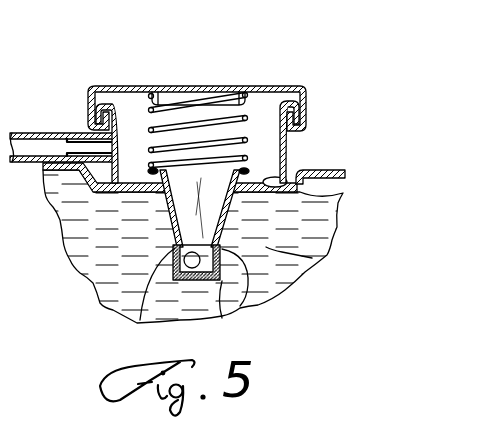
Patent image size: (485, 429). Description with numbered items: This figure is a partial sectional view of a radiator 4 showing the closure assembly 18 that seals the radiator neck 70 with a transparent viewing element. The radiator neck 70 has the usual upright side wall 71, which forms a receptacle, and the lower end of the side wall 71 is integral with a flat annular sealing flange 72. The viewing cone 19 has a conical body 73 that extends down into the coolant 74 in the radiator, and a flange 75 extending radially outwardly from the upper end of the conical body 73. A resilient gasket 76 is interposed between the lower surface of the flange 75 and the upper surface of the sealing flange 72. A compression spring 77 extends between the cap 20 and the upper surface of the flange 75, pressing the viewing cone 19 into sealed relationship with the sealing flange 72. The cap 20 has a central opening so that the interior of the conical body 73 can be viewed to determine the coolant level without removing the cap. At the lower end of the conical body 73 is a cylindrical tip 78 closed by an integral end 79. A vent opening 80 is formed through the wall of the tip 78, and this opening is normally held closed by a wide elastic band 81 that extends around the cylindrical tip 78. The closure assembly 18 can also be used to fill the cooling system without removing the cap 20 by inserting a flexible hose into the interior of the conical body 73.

The radiator 4 is at (337, 237).
The closure assembly 18 is at (225, 105).
The viewing cone 19 is at (168, 230).
The cap 20 is at (147, 84).
The radiator neck 70 is at (291, 154).
The side wall 71 is at (287, 142).
The sealing flange 72 is at (343, 193).
The conical body 73 is at (237, 196).
The coolant 74 is at (312, 258).
The flange 75 is at (262, 160).
The resilient gasket 76 is at (338, 204).
The compression spring 77 is at (250, 117).
The cylindrical tip 78 is at (186, 282).
The integral end 79 is at (223, 320).
The vent opening 80 is at (250, 302).
The elastic band 81 is at (140, 320).